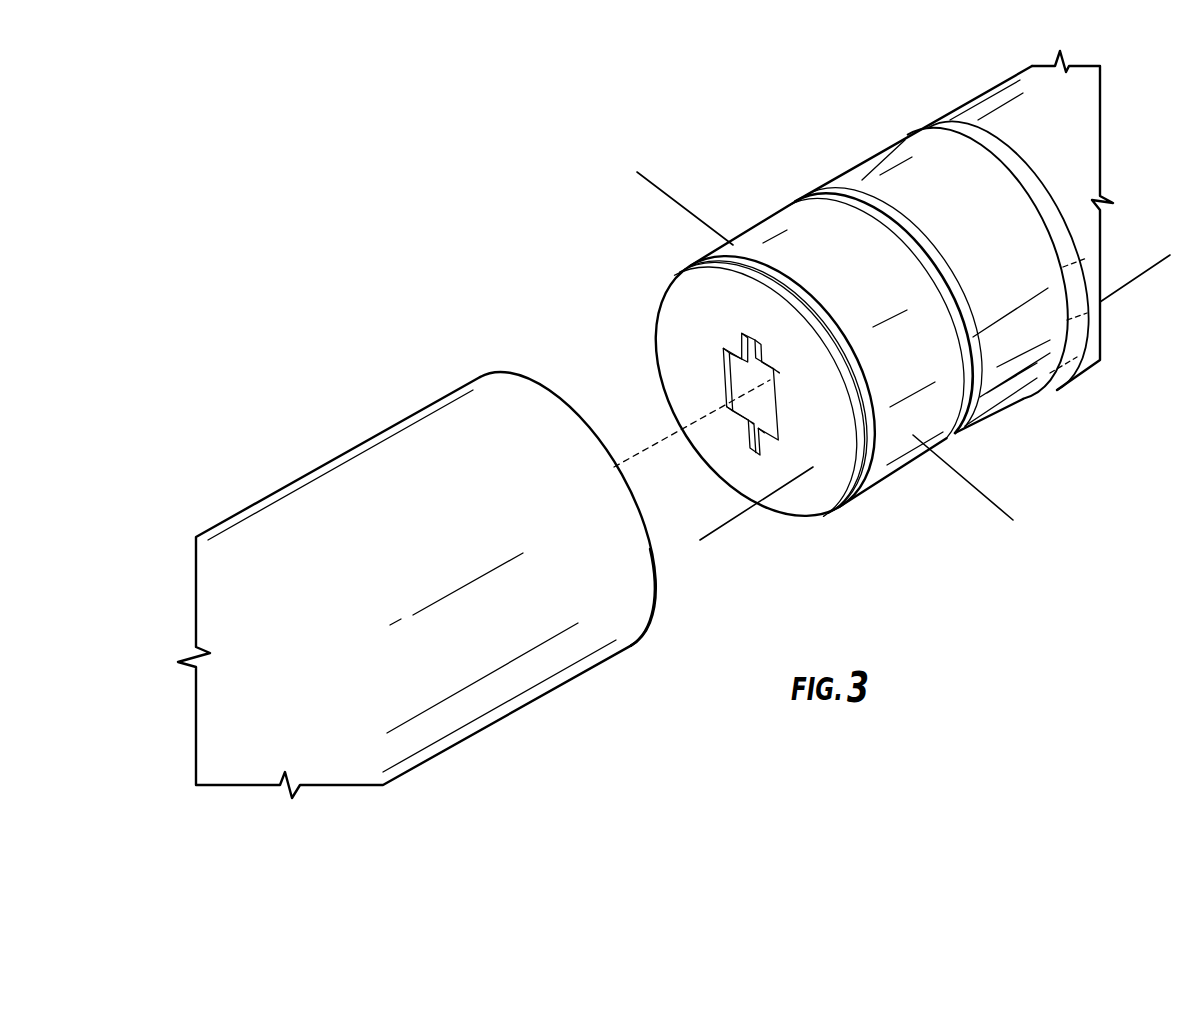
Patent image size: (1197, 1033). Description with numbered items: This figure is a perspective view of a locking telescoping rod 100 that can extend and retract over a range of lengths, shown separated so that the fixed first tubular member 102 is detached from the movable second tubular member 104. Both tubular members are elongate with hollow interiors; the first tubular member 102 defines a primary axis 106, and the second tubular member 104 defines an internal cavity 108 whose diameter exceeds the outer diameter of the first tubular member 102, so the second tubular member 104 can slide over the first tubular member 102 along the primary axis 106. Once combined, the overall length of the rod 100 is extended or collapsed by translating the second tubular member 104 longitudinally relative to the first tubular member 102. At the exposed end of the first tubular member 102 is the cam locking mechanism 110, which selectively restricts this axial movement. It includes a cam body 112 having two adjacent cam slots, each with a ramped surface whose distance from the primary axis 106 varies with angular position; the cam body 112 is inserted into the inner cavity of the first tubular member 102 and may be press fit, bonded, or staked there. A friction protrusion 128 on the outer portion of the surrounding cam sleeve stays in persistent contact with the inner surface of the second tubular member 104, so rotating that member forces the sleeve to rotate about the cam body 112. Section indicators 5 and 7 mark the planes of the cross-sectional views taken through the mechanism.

The telescoping rod 100 is at (532, 114).
The first tubular member 102 is at (996, 88).
The second tubular member 104 is at (302, 476).
The primary axis 106 is at (643, 450).
The internal cavity 108 is at (664, 594).
The cam locking mechanism 110 is at (790, 164).
The cam body 112 is at (668, 292).
The friction protrusion 128 is at (1040, 400).
The section line 5 is at (986, 509).
The section line 7 is at (1137, 268).